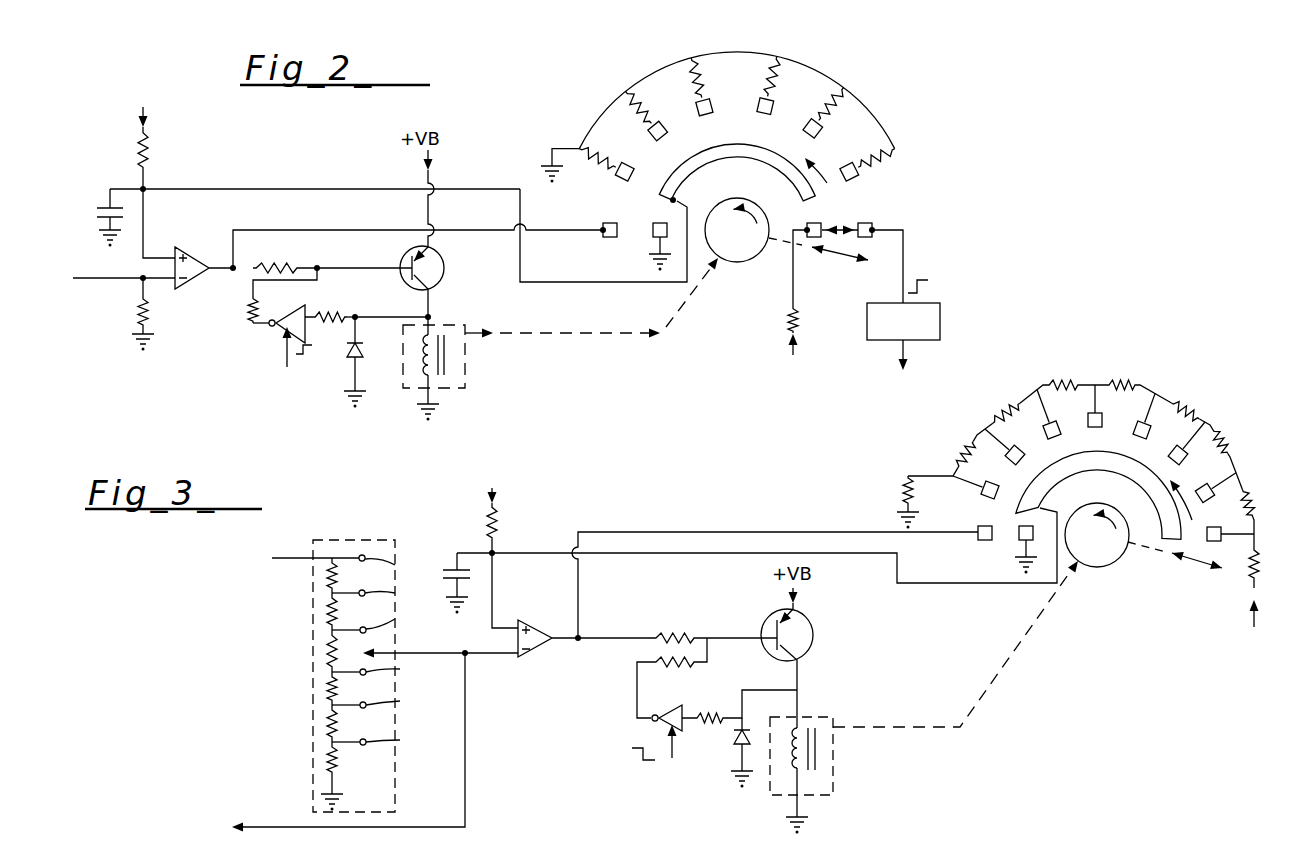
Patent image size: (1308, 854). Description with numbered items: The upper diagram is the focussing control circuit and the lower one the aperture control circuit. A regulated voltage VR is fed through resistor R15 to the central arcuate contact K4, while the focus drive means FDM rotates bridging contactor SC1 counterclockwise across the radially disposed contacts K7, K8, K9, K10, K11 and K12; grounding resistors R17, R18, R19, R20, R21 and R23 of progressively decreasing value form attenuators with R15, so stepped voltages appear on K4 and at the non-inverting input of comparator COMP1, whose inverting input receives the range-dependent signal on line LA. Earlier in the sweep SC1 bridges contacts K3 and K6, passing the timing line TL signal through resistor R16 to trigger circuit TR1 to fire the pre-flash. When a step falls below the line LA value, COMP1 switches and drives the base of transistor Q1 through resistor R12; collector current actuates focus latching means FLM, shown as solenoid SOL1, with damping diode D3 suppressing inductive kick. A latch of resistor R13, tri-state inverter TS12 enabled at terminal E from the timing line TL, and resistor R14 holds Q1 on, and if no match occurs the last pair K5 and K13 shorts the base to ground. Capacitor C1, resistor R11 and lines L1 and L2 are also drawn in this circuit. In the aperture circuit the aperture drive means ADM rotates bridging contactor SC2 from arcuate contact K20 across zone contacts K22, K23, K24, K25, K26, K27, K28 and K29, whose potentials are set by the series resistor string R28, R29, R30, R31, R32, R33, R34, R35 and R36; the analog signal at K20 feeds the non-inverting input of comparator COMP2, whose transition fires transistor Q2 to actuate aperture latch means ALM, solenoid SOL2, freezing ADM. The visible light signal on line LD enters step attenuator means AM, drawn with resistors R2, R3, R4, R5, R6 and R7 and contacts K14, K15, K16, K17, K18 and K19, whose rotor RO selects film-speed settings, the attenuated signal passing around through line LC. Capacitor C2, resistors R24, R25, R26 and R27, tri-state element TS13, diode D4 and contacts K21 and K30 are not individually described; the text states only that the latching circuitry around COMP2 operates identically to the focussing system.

In FIG. 2, the regulated voltage VR is at (139, 104).
In FIG. 3, the regulated voltage VR is at (878, 556).
In FIG. 2, the resistor R15 is at (148, 157).
In FIG. 2, the capacitor C1 is at (105, 205).
In FIG. 2, the line L2 is at (293, 188).
In FIG. 2, the line LA is at (110, 277).
In FIG. 2, the resistor R11 is at (138, 306).
In FIG. 2, the differential comparator COMP1 is at (197, 287).
In FIG. 2, the resistor R12 is at (283, 266).
In FIG. 2, the resistor R14 is at (251, 312).
In FIG. 2, the tri-state inverter TS12 is at (307, 305).
In FIG. 2, the enable terminal E is at (284, 331).
In FIG. 3, the enable terminal E is at (668, 727).
In FIG. 2, the timing line TL is at (537, 360).
In FIG. 3, the timing line TL is at (656, 755).
In FIG. 2, the resistor R13 is at (330, 312).
In FIG. 2, the damping diode D3 is at (351, 349).
In FIG. 2, the transistor Q1 is at (444, 266).
In FIG. 2, the focus latching means FLM is at (465, 347).
In FIG. 2, the solenoid SOL1 is at (425, 368).
In FIG. 2, the contact K13 is at (603, 222).
In FIG. 2, the contact K5 is at (656, 222).
In FIG. 2, the line L1 is at (587, 284).
In FIG. 2, the central arcuate contact K4 is at (777, 152).
In FIG. 2, the focus drive means FDM is at (742, 262).
In FIG. 2, the rotating bridging contactor SC1 is at (838, 257).
In FIG. 2, the contact K3 is at (816, 222).
In FIG. 2, the contact K6 is at (870, 222).
In FIG. 2, the resistor R16 is at (798, 327).
In FIG. 2, the trigger circuit TR1 is at (903, 300).
In FIG. 2, the grounding resistor R23 is at (587, 146).
In FIG. 2, the contact K12 is at (627, 164).
In FIG. 2, the grounding resistor R21 is at (636, 86).
In FIG. 2, the contact K11 is at (664, 124).
In FIG. 2, the grounding resistor R20 is at (709, 64).
In FIG. 2, the contact K10 is at (712, 101).
In FIG. 2, the grounding resistor R19 is at (783, 70).
In FIG. 2, the contact K9 is at (772, 112).
In FIG. 2, the grounding resistor R18 is at (838, 111).
In FIG. 2, the contact K8 is at (821, 133).
In FIG. 2, the resistor R17 is at (893, 143).
In FIG. 2, the contact K7 is at (858, 180).
In FIG. 3, the line LD is at (295, 555).
In FIG. 3, the step attenuator means AM is at (366, 538).
In FIG. 3, the resistor R2 is at (322, 578).
In FIG. 3, the resistor R3 is at (322, 613).
In FIG. 3, the resistor R4 is at (322, 645).
In FIG. 3, the resistor R5 is at (322, 688).
In FIG. 3, the resistor R6 is at (322, 722).
In FIG. 3, the resistor R7 is at (322, 755).
In FIG. 3, the contact K14 is at (396, 564).
In FIG. 3, the contact K15 is at (382, 591).
In FIG. 3, the contact K16 is at (382, 616).
In FIG. 3, the contact K17 is at (386, 669).
In FIG. 3, the contact K18 is at (386, 703).
In FIG. 3, the contact K19 is at (386, 739).
In FIG. 3, the rotor RO is at (388, 652).
In FIG. 3, the line LC is at (278, 825).
In FIG. 3, the capacitor C2 is at (454, 557).
In FIG. 3, the resistor R24 is at (496, 521).
In FIG. 3, the comparator COMP2 is at (538, 650).
In FIG. 3, the resistor R25 is at (690, 617).
In FIG. 3, the resistor R26 is at (665, 656).
In FIG. 3, the Schmitt trigger TS13 is at (672, 705).
In FIG. 3, the resistor R27 is at (710, 708).
In FIG. 3, the diode D4 is at (733, 739).
In FIG. 3, the transistor Q2 is at (812, 628).
In FIG. 3, the aperture latch means ALM is at (834, 749).
In FIG. 3, the solenoid SOL2 is at (787, 773).
In FIG. 3, the contact K30 is at (978, 526).
In FIG. 3, the contact K21 is at (1018, 540).
In FIG. 3, the arcuate contact K20 is at (1160, 546).
In FIG. 3, the aperture drive means ADM is at (1100, 567).
In FIG. 3, the rotating bridging contactor SC2 is at (1197, 562).
In FIG. 3, the resistor R36 is at (902, 485).
In FIG. 3, the resistor R35 is at (957, 455).
In FIG. 3, the resistor R34 is at (1003, 410).
In FIG. 3, the resistor R33 is at (1063, 379).
In FIG. 3, the resistor R32 is at (1130, 379).
In FIG. 3, the resistor R31 is at (1190, 408).
In FIG. 3, the resistor R30 is at (1250, 437).
In FIG. 3, the resistor R29 is at (1250, 500).
In FIG. 3, the resistor R28 is at (1271, 551).
In FIG. 3, the zone contact K29 is at (1003, 468).
In FIG. 3, the zone contact K28 is at (1038, 435).
In FIG. 3, the zone contact K27 is at (1072, 418).
In FIG. 3, the zone contact K26 is at (1110, 433).
In FIG. 3, the zone contact K25 is at (1138, 423).
In FIG. 3, the zone contact K24 is at (1173, 451).
In FIG. 3, the zone contact K23 is at (1199, 488).
In FIG. 3, the zone contact K22 is at (1216, 527).